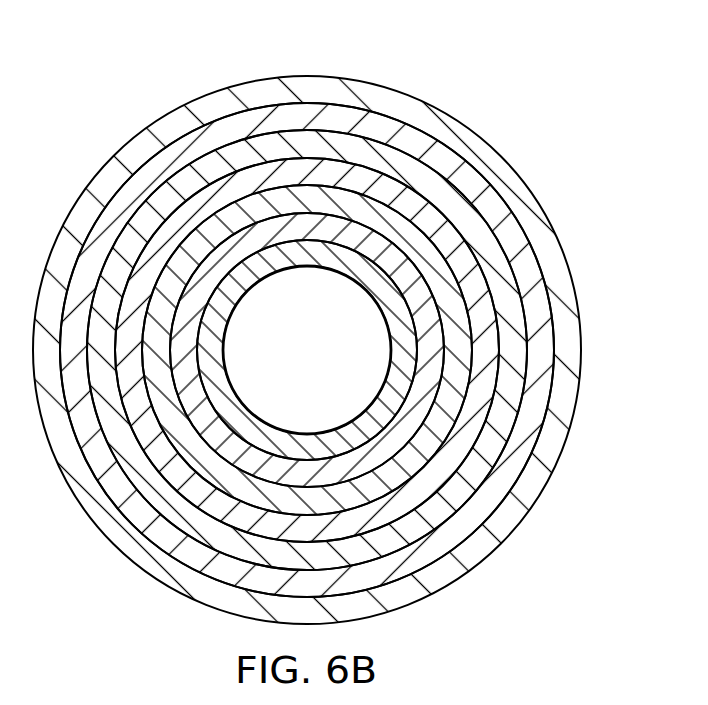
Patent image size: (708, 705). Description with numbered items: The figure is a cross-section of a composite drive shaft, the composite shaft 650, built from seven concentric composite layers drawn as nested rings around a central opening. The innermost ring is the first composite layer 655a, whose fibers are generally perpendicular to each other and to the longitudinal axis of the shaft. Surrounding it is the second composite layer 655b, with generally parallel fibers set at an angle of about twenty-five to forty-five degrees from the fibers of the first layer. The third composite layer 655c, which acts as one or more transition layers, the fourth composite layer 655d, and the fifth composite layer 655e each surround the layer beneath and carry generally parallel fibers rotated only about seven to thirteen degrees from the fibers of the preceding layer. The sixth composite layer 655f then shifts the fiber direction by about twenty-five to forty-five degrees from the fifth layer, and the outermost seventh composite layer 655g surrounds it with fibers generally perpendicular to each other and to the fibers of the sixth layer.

The composite shaft 650 is at (347, 322).
The first composite layer 655a is at (213, 347).
The second composite layer 655b is at (328, 233).
The third composite layer 655c is at (230, 213).
The fourth composite layer 655d is at (295, 170).
The fifth composite layer 655e is at (398, 165).
The sixth composite layer 655f is at (490, 208).
The seventh composite layer 655g is at (573, 343).